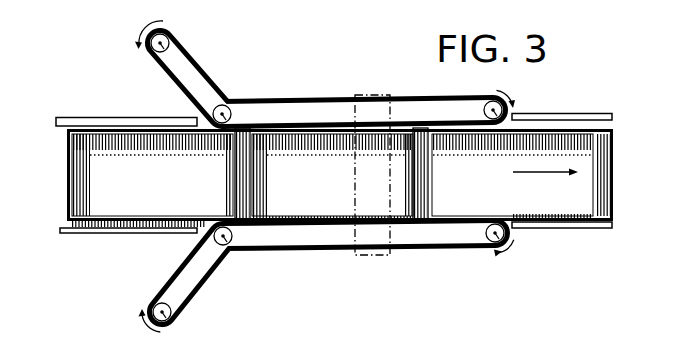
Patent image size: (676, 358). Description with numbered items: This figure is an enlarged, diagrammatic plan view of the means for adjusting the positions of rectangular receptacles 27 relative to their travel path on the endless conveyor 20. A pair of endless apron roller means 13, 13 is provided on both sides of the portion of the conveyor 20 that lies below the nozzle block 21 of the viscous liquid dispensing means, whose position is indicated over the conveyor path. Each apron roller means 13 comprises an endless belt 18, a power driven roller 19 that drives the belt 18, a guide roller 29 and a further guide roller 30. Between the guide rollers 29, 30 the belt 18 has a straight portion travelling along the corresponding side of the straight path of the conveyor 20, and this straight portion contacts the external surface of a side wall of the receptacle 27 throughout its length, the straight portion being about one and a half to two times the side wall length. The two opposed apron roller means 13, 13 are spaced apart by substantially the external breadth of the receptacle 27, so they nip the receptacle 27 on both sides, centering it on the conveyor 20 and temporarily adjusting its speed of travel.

The endless apron roller means 13 is at (327, 177).
The endless belt 18 is at (301, 55).
The power driven roller 19 is at (168, 46).
The endless conveyor 20 is at (103, 111).
The nozzle block 21 is at (355, 118).
The receptacle 27 is at (536, 142).
The guide roller 29 is at (229, 107).
The guide roller 30 is at (484, 110).